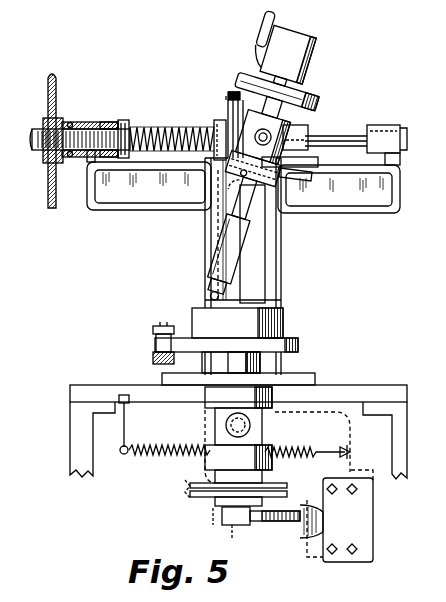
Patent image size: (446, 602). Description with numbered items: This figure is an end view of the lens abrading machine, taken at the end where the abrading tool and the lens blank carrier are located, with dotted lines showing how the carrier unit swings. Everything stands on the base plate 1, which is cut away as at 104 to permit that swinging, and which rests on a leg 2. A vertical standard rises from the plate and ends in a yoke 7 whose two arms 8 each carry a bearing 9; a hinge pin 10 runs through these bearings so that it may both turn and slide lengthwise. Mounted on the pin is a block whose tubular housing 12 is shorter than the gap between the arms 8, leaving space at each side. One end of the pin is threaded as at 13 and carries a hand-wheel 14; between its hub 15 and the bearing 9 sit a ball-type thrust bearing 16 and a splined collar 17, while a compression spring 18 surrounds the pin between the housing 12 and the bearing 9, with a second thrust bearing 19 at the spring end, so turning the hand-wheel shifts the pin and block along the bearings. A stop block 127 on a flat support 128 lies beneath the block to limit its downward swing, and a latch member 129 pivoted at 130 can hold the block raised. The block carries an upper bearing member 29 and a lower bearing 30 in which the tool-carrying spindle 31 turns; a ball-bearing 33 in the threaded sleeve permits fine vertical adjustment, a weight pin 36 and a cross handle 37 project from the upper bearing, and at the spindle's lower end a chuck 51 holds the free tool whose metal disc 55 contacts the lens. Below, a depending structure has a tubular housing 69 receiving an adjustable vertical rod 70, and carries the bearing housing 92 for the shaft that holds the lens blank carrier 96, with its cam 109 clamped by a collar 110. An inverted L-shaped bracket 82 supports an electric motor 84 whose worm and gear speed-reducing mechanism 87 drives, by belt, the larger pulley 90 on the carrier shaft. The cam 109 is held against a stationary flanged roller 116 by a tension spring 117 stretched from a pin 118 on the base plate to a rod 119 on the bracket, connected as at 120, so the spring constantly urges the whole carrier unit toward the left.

The base plate 1 is at (375, 394).
The base leg 2 is at (398, 428).
The yoke 7 is at (137, 195).
The arm 8 is at (386, 168).
The bearing 9 is at (88, 165).
The hinge pin 10 is at (334, 143).
The tubular housing 12 is at (298, 133).
The threaded portion 13 is at (104, 123).
The hand-wheel 14 is at (52, 208).
The hub 15 is at (63, 126).
The thrust bearing 16 is at (71, 123).
The collar 17 is at (78, 128).
The compression spring 18 is at (166, 126).
The thrust bearing 19 is at (125, 122).
The bearing member 29 is at (287, 54).
The bearing 30 is at (232, 160).
The tool-carrying spindle 31 is at (245, 223).
The ball-bearing 33 is at (233, 186).
The second pin 36 is at (260, 37).
The cross bar 37 is at (305, 94).
The chuck 51 is at (232, 256).
The metal disc 55 is at (215, 300).
The tubular housing 69 is at (246, 286).
The cylindrical rod 70 is at (262, 302).
The inverted L-shaped bracket 82 is at (340, 502).
The electric motor 84 is at (318, 530).
The worm and gear speed-reducing mechanism 87 is at (243, 512).
The pulley 90 is at (210, 490).
The bearing housing 92 is at (258, 427).
The lens blank carrier 96 is at (272, 318).
The cut away portion 104 is at (300, 380).
The cam 109 is at (298, 344).
The collar 110 is at (232, 358).
The flanged roller 116 is at (153, 347).
The tension spring 117 is at (167, 457).
The pin 118 is at (129, 423).
The rod 119 is at (344, 450).
The connection 120 is at (350, 455).
The block 127 is at (290, 163).
The flat support 128 is at (283, 173).
The latch member 129 is at (231, 97).
The pivot 130 is at (230, 140).